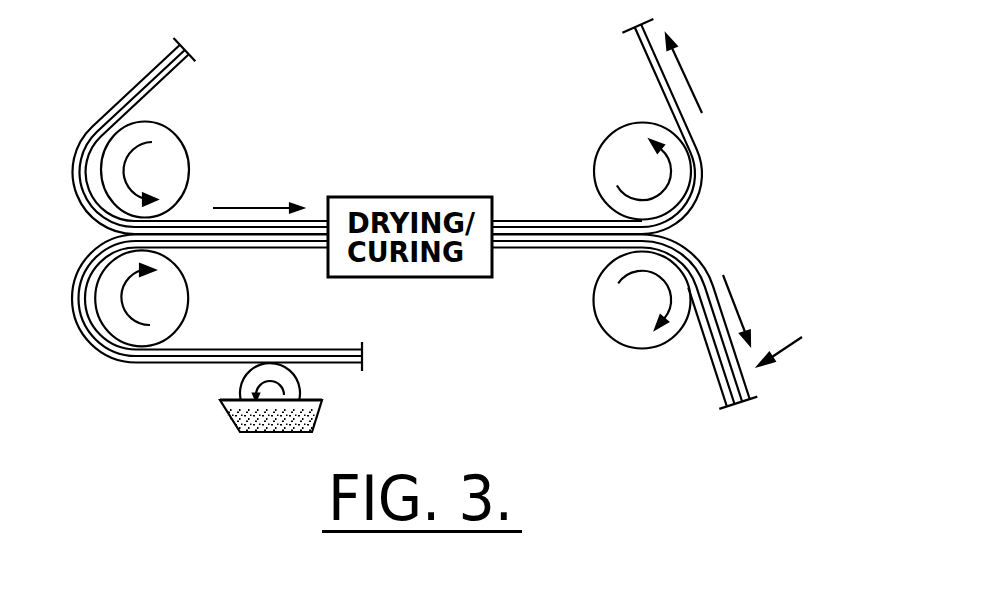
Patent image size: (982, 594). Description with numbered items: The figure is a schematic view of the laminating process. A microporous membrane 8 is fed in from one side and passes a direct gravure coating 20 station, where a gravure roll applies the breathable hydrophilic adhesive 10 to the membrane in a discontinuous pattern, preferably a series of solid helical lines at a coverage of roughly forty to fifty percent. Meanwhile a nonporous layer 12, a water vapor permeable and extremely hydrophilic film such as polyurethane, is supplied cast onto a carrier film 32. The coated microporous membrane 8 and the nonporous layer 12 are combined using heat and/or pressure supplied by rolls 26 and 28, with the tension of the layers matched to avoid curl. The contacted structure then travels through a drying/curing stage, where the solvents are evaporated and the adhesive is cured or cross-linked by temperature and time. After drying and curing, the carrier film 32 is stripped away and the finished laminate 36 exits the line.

The microporous membrane 8 is at (120, 361).
The breathable hydrophilic adhesive 10 is at (233, 429).
The nonporous layer 12 is at (135, 92).
The direct gravure coating 20 is at (353, 402).
The roll 26 is at (170, 172).
The roll 28 is at (170, 298).
The carrier film 32 is at (157, 85).
The laminate 36 is at (802, 346).